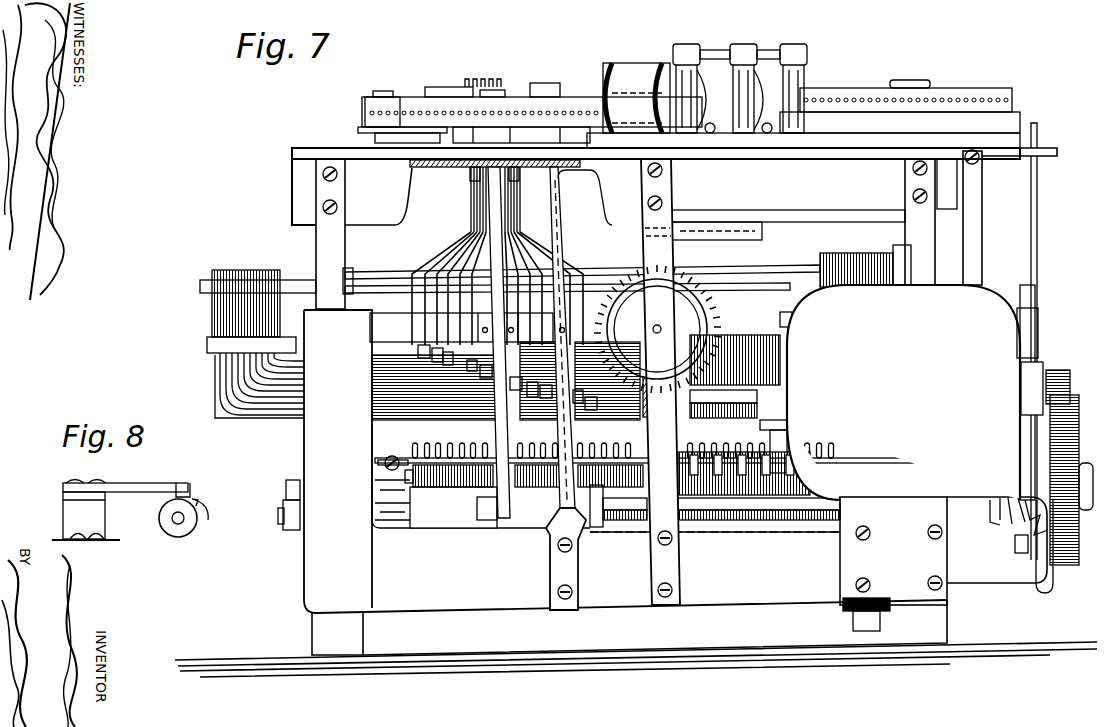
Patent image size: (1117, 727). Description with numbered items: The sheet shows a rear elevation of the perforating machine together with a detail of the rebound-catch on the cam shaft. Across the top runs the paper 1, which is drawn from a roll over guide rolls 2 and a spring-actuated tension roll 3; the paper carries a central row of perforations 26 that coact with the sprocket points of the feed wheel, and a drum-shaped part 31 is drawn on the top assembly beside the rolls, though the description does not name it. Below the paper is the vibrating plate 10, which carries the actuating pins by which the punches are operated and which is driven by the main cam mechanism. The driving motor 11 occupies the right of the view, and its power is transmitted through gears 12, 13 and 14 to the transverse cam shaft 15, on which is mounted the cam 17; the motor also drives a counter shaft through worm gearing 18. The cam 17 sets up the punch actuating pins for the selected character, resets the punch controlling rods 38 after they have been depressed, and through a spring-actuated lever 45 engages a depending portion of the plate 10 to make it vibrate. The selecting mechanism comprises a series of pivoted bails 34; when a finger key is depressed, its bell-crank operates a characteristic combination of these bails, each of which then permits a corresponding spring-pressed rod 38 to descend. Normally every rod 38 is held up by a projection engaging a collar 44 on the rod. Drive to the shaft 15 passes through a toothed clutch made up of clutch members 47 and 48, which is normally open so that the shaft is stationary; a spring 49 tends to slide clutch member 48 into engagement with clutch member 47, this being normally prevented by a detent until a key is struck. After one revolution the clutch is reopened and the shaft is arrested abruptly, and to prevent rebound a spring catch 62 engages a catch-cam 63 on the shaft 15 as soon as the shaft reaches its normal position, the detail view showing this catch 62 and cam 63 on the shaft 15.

In FIG. 7, the paper 1 is at (970, 92).
In FIG. 7, the guide rolls 2 is at (513, 97).
In FIG. 7, the spring-actuated tension roll 3 is at (367, 98).
In FIG. 7, the vibrating plate 10 is at (459, 88).
In FIG. 7, the driving motor 11 is at (903, 392).
In FIG. 7, the gear 12 is at (1060, 368).
In FIG. 7, the gear 13 is at (1055, 435).
In FIG. 7, the gear 14 is at (1063, 568).
In FIG. 7, the cam shaft 15 is at (397, 513).
In FIG. 8, the cam shaft 15 is at (185, 520).
In FIG. 7, the cam 17 is at (457, 512).
In FIG. 7, the worm gearing 18 is at (657, 329).
In FIG. 7, the central row of perforations 26 is at (888, 100).
In FIG. 7, the drum 31 is at (637, 72).
In FIG. 7, the pivoted bails 34 is at (242, 382).
In FIG. 7, the spring-pressed rods 38 is at (505, 216).
In FIG. 7, the collar 44 is at (473, 370).
In FIG. 7, the spring-actuated lever 45 is at (470, 237).
In FIG. 7, the clutch member 47 is at (1040, 543).
In FIG. 7, the clutch member 48 is at (1037, 510).
In FIG. 7, the spring 49 is at (1000, 522).
In FIG. 7, the spring catch 62 is at (290, 480).
In FIG. 8, the spring catch 62 is at (146, 484).
In FIG. 7, the catch-cam 63 is at (292, 505).
In FIG. 8, the catch-cam 63 is at (165, 525).